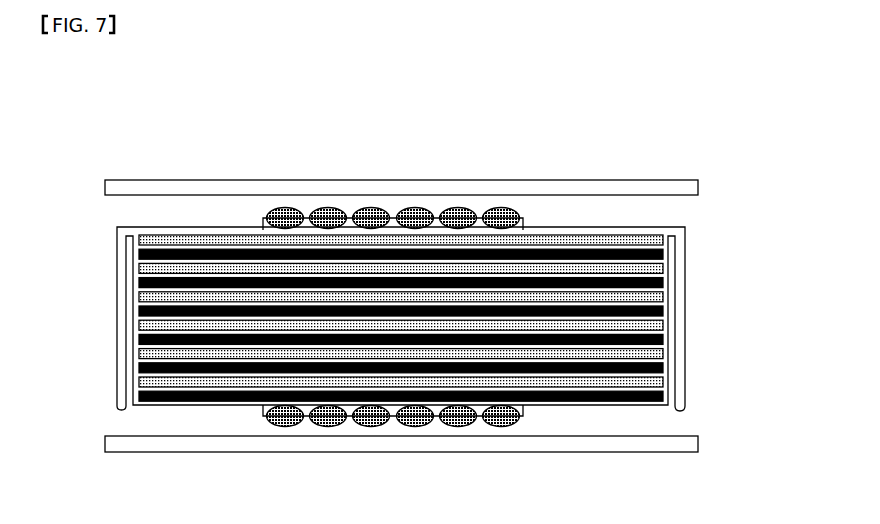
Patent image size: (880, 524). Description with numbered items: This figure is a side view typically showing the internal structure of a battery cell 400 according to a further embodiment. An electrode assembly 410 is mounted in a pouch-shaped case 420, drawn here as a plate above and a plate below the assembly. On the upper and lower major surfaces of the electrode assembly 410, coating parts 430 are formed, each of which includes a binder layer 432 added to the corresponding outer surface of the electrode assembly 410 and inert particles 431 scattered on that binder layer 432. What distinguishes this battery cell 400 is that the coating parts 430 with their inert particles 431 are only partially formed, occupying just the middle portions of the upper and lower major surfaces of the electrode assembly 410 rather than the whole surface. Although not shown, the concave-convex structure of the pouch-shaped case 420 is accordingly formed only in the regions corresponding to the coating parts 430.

The battery cell 400 is at (35, 82).
The electrode assembly 410 is at (683, 277).
The pouch-shaped case 420 is at (675, 178).
The coating part 430 is at (369, 310).
The inert particles 431 is at (323, 203).
The binder layer 432 is at (387, 208).